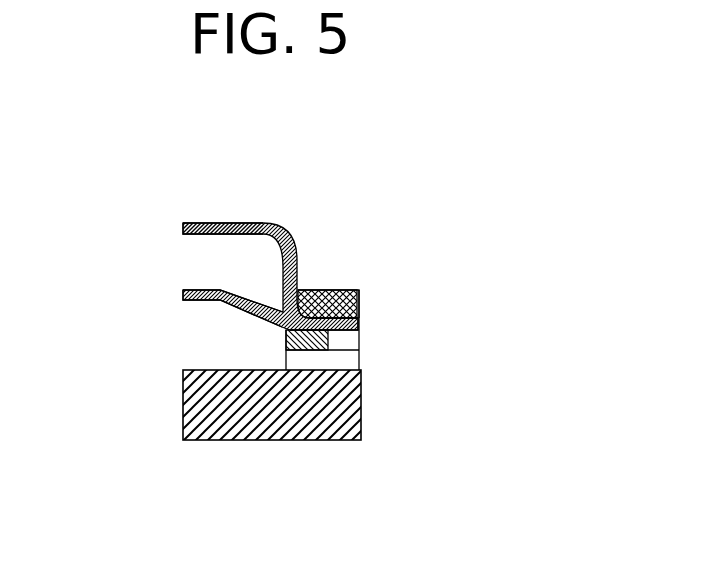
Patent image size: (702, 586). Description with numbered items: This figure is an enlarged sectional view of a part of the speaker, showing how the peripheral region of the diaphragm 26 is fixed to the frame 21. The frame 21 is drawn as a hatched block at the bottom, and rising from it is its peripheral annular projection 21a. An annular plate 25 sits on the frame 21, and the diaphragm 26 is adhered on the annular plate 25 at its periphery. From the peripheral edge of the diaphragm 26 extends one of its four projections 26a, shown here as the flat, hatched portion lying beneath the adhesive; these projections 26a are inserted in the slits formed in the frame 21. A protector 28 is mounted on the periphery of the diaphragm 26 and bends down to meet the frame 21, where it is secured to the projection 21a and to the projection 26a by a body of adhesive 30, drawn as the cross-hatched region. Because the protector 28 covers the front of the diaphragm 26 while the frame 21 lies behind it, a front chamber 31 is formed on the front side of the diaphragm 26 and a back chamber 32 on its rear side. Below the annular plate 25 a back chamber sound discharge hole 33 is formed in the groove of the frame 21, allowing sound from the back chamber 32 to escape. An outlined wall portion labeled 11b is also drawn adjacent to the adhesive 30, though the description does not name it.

The protector 28 is at (215, 223).
The diaphragm 26 is at (221, 290).
The front chamber 31 is at (188, 258).
The back chamber 32 is at (208, 337).
The adhesive 30 is at (318, 288).
The housing wall 11b is at (333, 289).
The peripheral annular projection 21a is at (360, 290).
The projection 26a is at (360, 328).
The annular plate 25 is at (330, 340).
The back chamber sound discharge hole 33 is at (313, 359).
The frame 21 is at (305, 400).